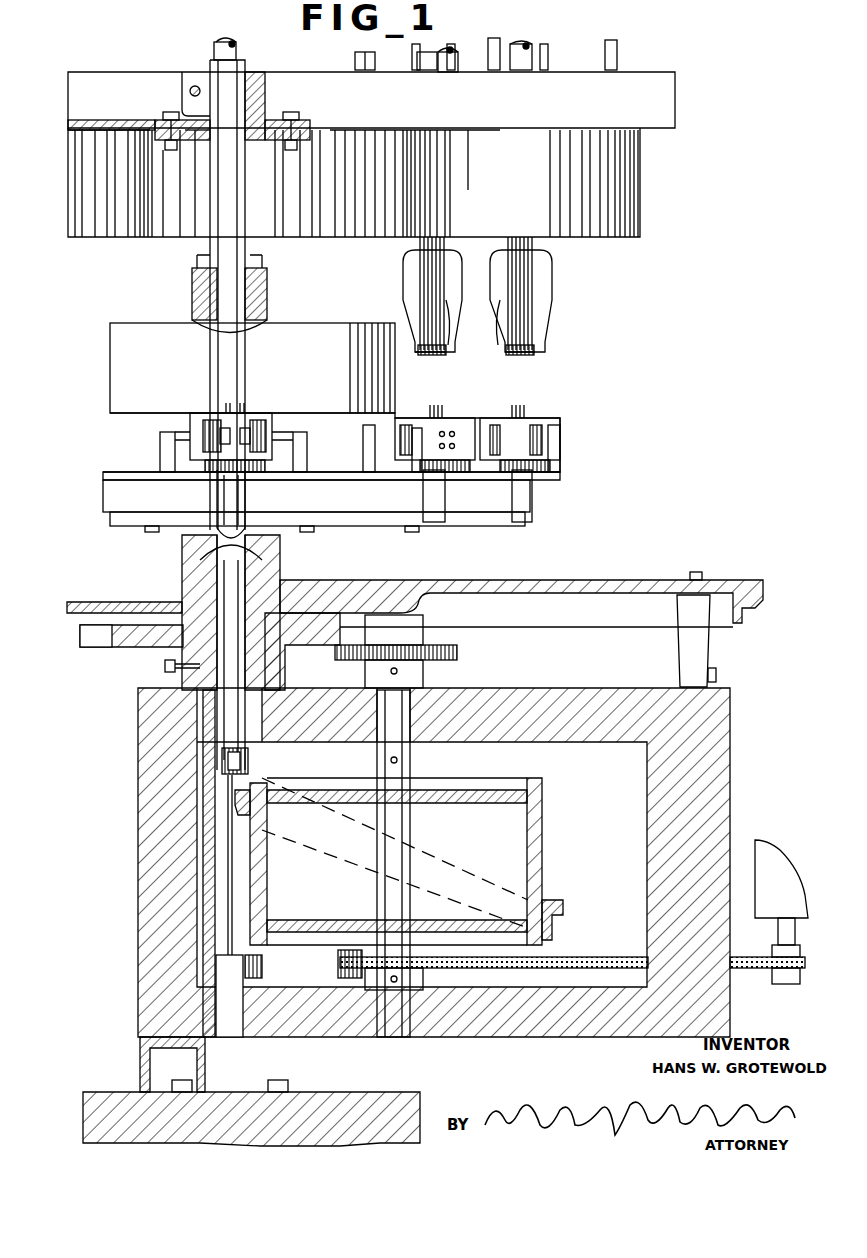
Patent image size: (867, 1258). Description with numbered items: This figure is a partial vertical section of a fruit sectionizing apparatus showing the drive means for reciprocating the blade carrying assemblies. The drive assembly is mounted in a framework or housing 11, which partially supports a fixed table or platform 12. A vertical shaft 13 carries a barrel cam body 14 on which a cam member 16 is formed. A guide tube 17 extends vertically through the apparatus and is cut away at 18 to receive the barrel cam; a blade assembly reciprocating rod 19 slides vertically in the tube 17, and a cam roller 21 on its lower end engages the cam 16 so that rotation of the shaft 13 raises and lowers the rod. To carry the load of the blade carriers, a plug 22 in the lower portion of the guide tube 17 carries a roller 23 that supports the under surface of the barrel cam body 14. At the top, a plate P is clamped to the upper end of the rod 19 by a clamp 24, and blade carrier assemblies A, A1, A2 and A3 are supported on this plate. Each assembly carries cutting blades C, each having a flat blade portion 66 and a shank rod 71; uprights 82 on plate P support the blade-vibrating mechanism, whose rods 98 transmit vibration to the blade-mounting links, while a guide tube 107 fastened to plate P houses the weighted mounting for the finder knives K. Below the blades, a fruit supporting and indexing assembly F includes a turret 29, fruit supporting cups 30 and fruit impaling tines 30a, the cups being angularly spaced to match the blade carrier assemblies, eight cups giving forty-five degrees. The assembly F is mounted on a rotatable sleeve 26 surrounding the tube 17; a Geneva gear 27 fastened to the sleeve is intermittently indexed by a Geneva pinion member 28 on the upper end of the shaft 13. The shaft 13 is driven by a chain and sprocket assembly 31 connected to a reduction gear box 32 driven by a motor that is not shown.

The guide tube 107 is at (216, 43).
The clamp 24 is at (190, 75).
The uprights 82 is at (240, 53).
The plate P is at (104, 128).
The rods 98 is at (415, 45).
The blade carrier assembly A is at (641, 155).
The blade carrier assembly A1 is at (381, 226).
The blade carrier assembly A2 is at (200, 226).
The blade carrier assembly A3 is at (97, 224).
The blade assembly reciprocating rod 19 is at (232, 248).
The cutting blade C is at (402, 298).
The rod 71 is at (422, 245).
The flat blade 66 is at (404, 275).
The finder knives K is at (514, 345).
The fruit supporting and indexing assembly F is at (567, 464).
The fruit supporting cups 30 is at (214, 425).
The fruit impaling tines 30a is at (242, 412).
The turret 29 is at (312, 506).
The rotatable sleeve 26 is at (262, 572).
The table 12 is at (568, 580).
The Geneva gear 27 is at (138, 642).
The Geneva pinion member 28 is at (460, 651).
The housing 11 is at (731, 755).
The cam roller 21 is at (250, 760).
The guide tube 17 is at (213, 898).
The cut away 18 is at (230, 872).
The barrel cam body 14 is at (538, 836).
The cam member 16 is at (250, 815).
The vertical shaft 13 is at (404, 863).
The chain and sprocket assembly 31 is at (622, 965).
The reduction gear box 32 is at (766, 868).
The roller 23 is at (262, 965).
The plug 22 is at (232, 1040).